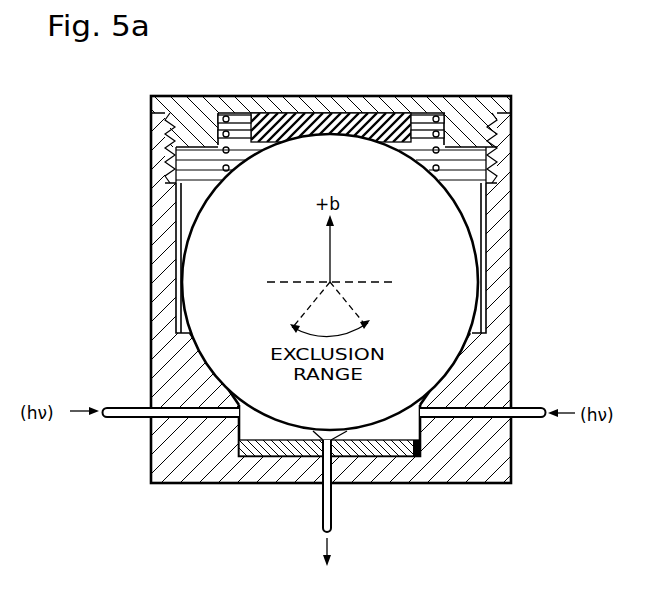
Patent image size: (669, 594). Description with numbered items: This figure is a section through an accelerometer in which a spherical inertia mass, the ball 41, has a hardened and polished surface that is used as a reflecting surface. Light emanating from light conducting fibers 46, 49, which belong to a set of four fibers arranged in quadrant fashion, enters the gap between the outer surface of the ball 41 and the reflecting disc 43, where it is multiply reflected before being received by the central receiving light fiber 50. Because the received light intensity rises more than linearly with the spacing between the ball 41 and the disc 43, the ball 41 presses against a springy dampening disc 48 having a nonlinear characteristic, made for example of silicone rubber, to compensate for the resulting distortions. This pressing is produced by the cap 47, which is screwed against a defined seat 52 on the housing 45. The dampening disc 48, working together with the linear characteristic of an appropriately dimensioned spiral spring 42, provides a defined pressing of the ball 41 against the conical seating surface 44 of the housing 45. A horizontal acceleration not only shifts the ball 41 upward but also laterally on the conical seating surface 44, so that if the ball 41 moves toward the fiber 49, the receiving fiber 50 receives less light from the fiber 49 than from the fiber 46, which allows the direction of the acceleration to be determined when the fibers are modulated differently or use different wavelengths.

The ball 41 is at (452, 266).
The spiral spring 42 is at (431, 118).
The reflecting disc 43 is at (387, 447).
The conical seating surface 44 is at (452, 391).
The housing 45 is at (498, 302).
The light conducting fiber 46 is at (517, 410).
The cap 47 is at (467, 118).
The springy dampening disc 48 is at (379, 112).
The light conducting fiber 49 is at (118, 409).
The central receiving light fiber 50 is at (332, 512).
The defined seat 52 is at (492, 117).